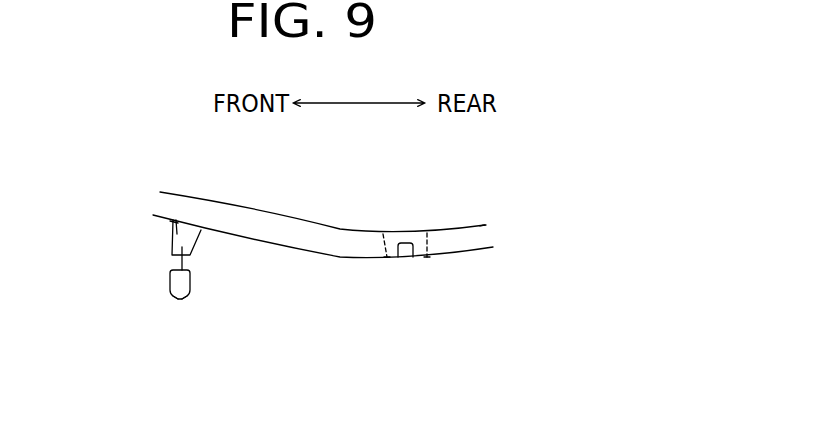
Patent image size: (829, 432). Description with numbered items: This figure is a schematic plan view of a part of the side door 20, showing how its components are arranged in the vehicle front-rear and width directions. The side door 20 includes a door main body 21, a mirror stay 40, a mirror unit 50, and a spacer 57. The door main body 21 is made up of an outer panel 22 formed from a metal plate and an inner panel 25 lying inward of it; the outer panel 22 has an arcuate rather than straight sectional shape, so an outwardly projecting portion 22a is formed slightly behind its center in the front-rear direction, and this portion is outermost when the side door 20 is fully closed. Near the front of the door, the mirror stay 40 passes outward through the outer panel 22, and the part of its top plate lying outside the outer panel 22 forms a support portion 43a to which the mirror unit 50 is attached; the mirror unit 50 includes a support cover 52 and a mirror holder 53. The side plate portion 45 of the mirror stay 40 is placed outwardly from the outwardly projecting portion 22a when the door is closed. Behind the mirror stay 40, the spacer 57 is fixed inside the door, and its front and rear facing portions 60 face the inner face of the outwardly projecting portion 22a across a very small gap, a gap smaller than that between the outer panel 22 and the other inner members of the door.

The side door 20 is at (328, 202).
The door main body 21 is at (191, 166).
The outer panel 22 is at (487, 248).
The outwardly projecting portion 22a is at (407, 258).
The inner panel 25 is at (485, 224).
The mirror stay 40 is at (173, 233).
The support portion 43a is at (177, 223).
The side plate portion 45 is at (172, 258).
The mirror unit 50 is at (172, 300).
The support cover 52 is at (170, 266).
The mirror holder 53 is at (187, 303).
The spacer 57 is at (381, 234).
The facing portions 60 is at (390, 260).